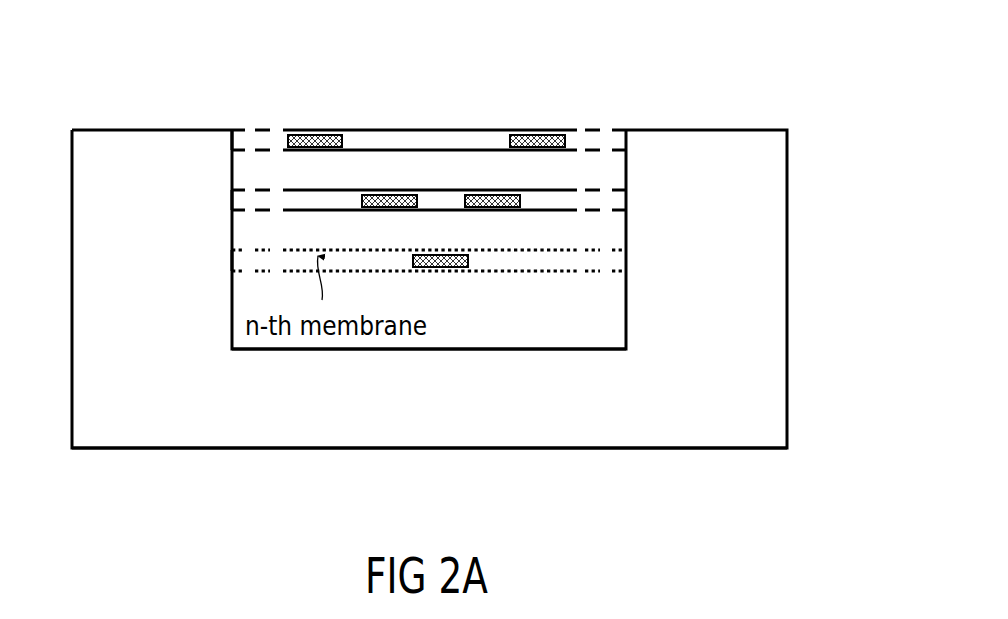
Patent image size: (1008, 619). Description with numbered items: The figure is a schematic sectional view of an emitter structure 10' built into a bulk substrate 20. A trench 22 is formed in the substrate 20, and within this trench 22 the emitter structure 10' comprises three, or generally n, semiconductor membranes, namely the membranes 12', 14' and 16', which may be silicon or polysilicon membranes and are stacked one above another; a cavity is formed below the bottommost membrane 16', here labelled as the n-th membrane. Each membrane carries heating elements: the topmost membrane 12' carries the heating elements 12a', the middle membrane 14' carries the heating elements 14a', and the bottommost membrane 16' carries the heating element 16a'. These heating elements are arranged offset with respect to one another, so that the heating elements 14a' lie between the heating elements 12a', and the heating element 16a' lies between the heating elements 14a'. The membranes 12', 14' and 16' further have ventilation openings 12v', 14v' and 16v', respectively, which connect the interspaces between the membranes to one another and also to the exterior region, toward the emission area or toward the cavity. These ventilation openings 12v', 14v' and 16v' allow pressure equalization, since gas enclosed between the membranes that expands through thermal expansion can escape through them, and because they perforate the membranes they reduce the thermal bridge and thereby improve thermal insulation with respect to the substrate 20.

The emitter structure 10' is at (471, 236).
The membrane 12' is at (471, 156).
The membrane 14' is at (471, 216).
The membrane 16' is at (471, 277).
The heating elements 12a' is at (439, 96).
The heating elements 14a' is at (447, 126).
The heating element 16a' is at (447, 173).
The ventilation opening 12v' is at (228, 97).
The ventilation opening 14v' is at (193, 127).
The ventilation opening 16v' is at (162, 158).
The substrate 20 is at (113, 408).
The trench 22 is at (537, 325).